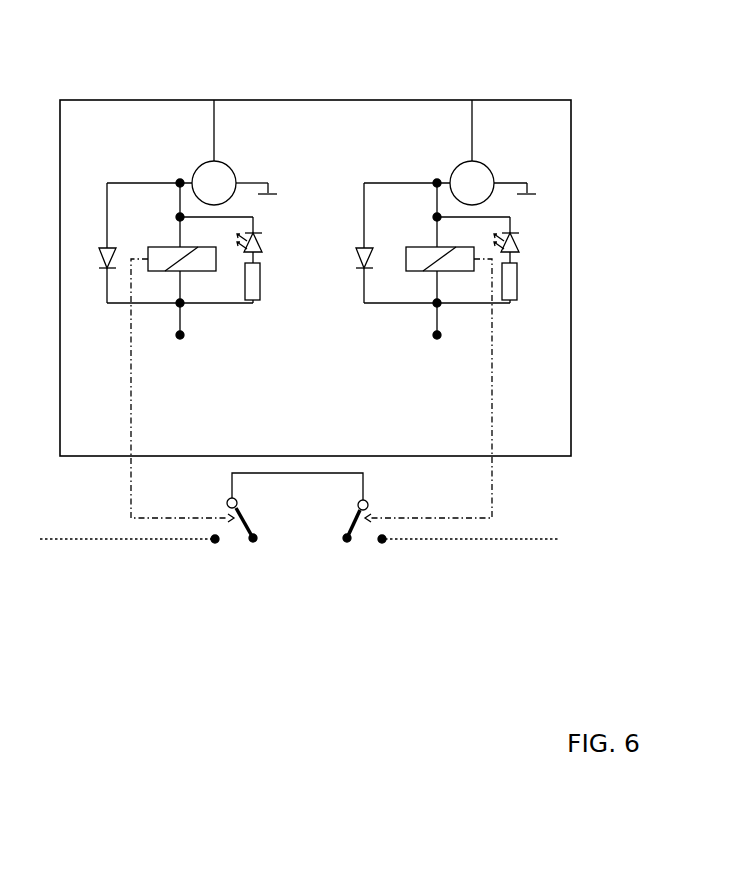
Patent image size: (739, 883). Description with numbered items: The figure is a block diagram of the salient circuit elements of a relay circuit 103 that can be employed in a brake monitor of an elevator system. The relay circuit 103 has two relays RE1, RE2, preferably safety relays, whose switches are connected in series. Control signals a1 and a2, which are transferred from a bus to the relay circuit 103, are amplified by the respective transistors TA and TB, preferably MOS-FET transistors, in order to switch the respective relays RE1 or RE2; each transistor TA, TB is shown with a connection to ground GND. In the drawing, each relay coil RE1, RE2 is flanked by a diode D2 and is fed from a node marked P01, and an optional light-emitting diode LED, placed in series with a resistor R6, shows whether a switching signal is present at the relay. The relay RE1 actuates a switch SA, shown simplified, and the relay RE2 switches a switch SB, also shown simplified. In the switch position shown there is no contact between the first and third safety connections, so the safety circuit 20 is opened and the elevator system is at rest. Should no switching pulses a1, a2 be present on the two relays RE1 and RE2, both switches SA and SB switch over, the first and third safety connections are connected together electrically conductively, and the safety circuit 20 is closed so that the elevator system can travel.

The relay circuit 103 is at (524, 112).
The safety circuit 20 is at (305, 540).
The control signal a1 is at (214, 80).
The control signal a2 is at (472, 80).
The transistor TA is at (214, 183).
The transistor TB is at (457, 166).
The ground GND is at (397, 178).
The diode D2 is at (220, 243).
The relay RE1 is at (177, 247).
The relay RE2 is at (435, 247).
The light-emitting diode LED is at (398, 247).
The resistor R6 is at (395, 283).
The power terminal P01 is at (328, 334).
The switch SA is at (250, 520).
The switch SB is at (345, 521).